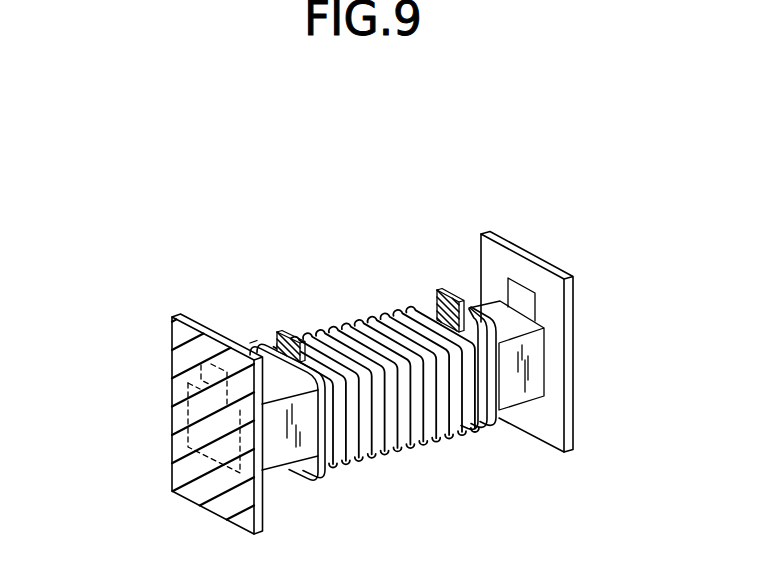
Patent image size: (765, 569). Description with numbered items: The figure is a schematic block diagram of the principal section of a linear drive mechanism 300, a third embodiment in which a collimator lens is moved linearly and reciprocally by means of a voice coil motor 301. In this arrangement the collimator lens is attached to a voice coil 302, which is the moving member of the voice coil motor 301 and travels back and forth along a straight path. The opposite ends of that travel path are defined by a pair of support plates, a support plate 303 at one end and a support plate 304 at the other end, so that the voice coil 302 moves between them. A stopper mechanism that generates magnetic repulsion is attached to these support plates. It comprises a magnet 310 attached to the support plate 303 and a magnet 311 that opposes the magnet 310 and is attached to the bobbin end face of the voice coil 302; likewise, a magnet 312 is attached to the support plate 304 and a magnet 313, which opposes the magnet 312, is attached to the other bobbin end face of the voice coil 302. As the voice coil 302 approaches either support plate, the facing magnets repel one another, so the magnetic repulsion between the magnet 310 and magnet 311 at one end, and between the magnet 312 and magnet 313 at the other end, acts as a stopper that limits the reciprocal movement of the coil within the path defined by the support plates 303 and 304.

The linear drive mechanism 300 is at (318, 186).
The voice coil motor 301 is at (371, 289).
The voice coil 302 is at (334, 330).
The support plate 303 is at (167, 337).
The support plate 304 is at (537, 277).
The magnet 310 is at (216, 357).
The magnet 311 is at (279, 330).
The magnet 312 is at (516, 279).
The magnet 313 is at (446, 288).